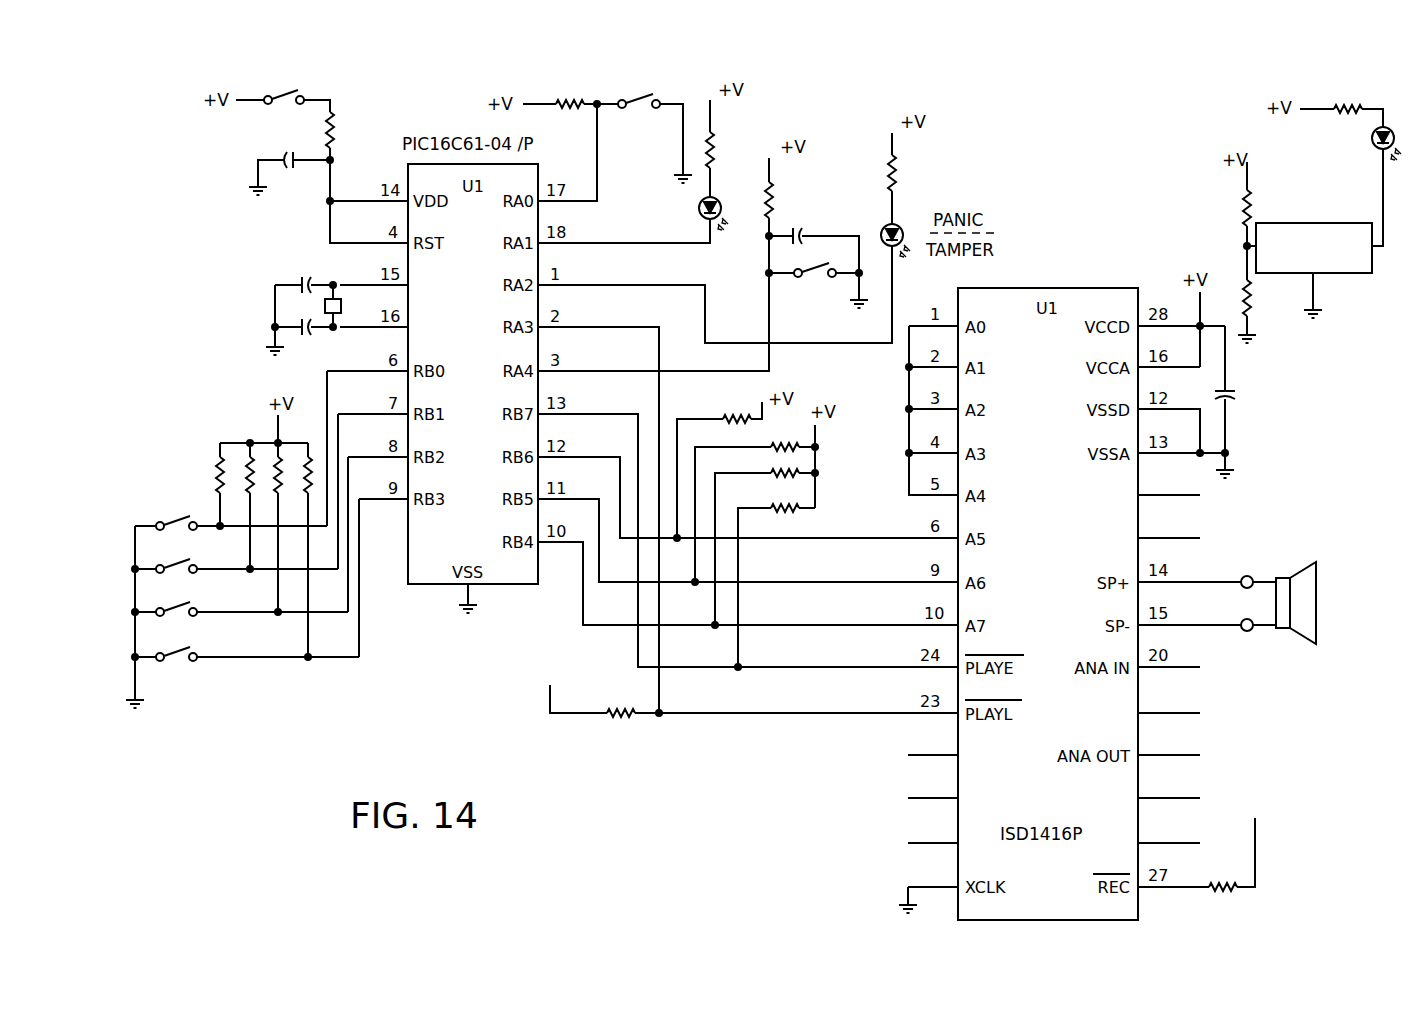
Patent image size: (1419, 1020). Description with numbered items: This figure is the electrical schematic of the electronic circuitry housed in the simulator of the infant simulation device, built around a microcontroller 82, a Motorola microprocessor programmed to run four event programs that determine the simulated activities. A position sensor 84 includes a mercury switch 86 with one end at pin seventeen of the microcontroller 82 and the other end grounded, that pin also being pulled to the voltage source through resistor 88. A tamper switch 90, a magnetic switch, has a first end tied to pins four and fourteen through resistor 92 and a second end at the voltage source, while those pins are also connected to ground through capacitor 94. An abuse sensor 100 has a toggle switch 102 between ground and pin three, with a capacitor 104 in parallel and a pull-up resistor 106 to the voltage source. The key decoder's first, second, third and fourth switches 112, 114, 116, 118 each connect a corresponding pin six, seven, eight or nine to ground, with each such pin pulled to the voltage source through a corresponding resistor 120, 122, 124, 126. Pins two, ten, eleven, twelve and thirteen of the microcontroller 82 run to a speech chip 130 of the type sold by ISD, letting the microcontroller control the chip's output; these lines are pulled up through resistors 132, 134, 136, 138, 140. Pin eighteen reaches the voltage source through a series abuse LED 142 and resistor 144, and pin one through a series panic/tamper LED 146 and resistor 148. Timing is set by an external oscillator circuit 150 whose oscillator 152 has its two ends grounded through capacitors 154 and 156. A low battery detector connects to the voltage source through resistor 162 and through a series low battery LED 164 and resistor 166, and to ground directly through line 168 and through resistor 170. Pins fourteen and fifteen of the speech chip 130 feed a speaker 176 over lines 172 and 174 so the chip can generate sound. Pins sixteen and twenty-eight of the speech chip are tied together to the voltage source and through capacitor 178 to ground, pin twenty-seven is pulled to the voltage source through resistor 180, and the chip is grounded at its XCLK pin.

The microcontroller 82 is at (437, 585).
The position sensor 84 is at (488, 95).
The mercury switch 86 is at (650, 112).
The resistor 88 is at (565, 110).
The tamper switch 90 is at (290, 97).
The resistor 92 is at (338, 127).
The capacitor 94 is at (288, 172).
The abuse sensor 100 is at (812, 166).
The toggle switch 102 is at (822, 266).
The capacitor 104 is at (798, 228).
The resistor 106 is at (764, 195).
The first switch 112 is at (178, 518).
The second switch 114 is at (183, 564).
The third switch 116 is at (183, 607).
The fourth switch 118 is at (183, 652).
The resistor 120 is at (220, 458).
The resistor 122 is at (250, 458).
The resistor 124 is at (278, 458).
The resistor 126 is at (308, 458).
The speech chip 130 is at (957, 857).
The resistor 132 is at (616, 720).
The resistor 134 is at (780, 476).
The resistor 136 is at (784, 447).
The resistor 138 is at (742, 416).
The resistor 140 is at (784, 508).
The abuse LED 142 is at (698, 210).
The resistor 144 is at (712, 137).
The panic/tamper LED 146 is at (904, 226).
The resistor 148 is at (900, 166).
The external oscillator circuit 150 is at (236, 314).
The oscillator 152 is at (323, 305).
The capacitor 154 is at (303, 280).
The capacitor 156 is at (312, 336).
The resistor 162 is at (1242, 207).
The low battery LED 164 is at (1377, 150).
The resistor 166 is at (1343, 113).
The line 168 is at (1315, 295).
The resistor 170 is at (1256, 312).
The line 172 is at (1203, 578).
The line 174 is at (1211, 629).
The speaker 176 is at (1298, 562).
The capacitor 178 is at (1232, 399).
The resistor 180 is at (1230, 883).